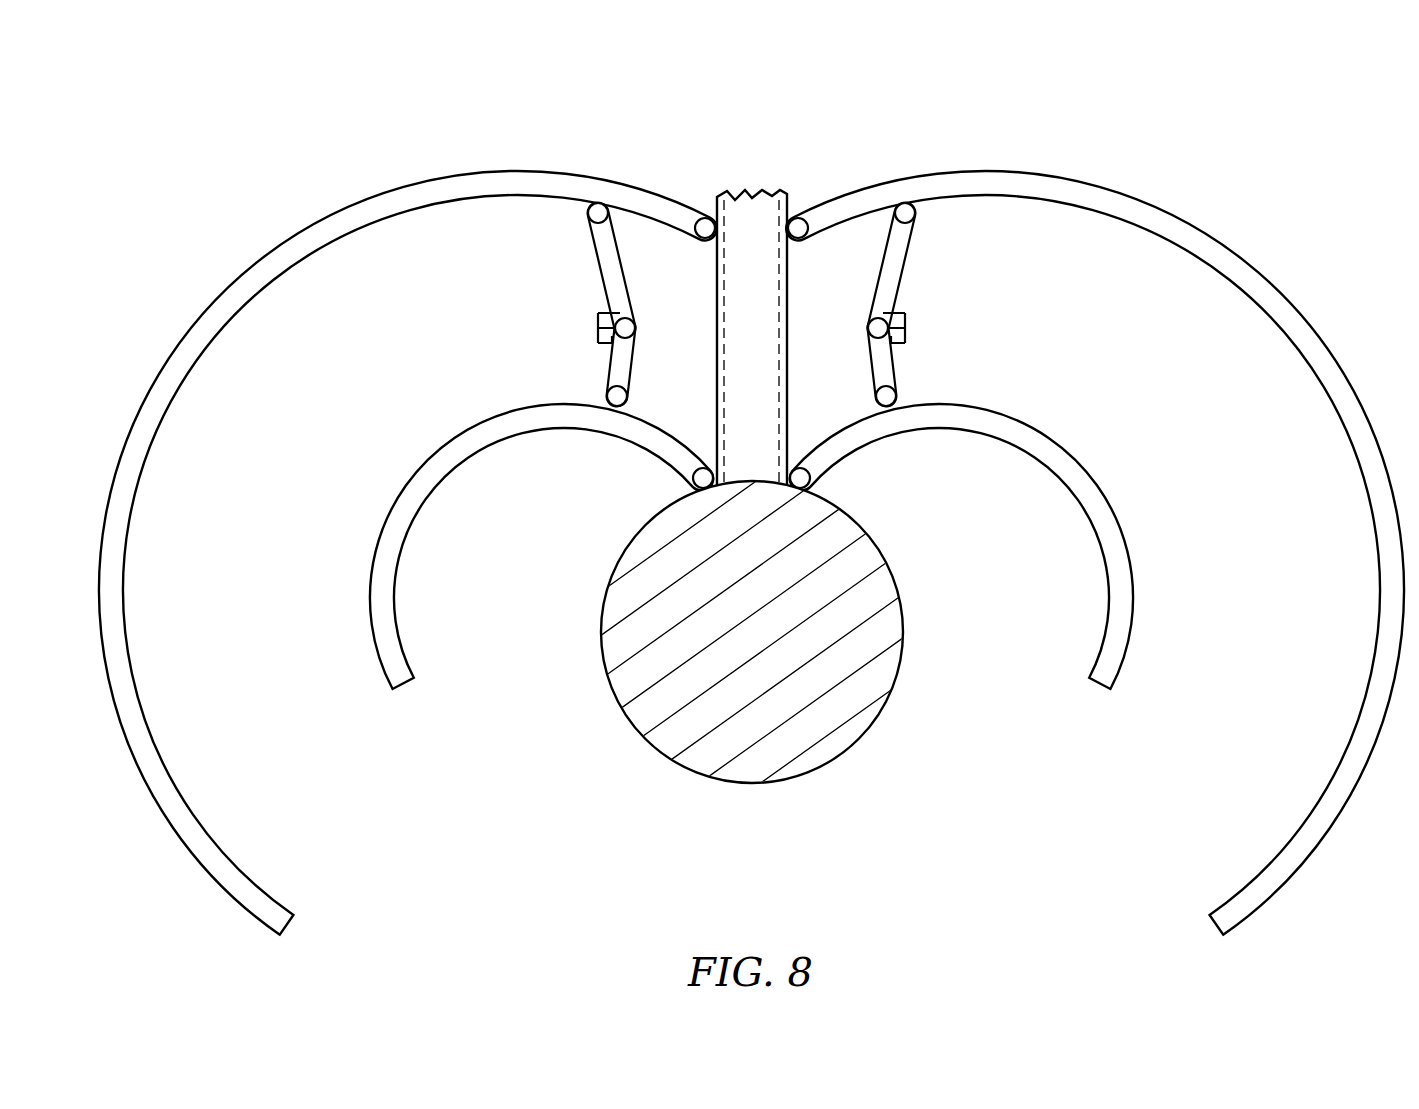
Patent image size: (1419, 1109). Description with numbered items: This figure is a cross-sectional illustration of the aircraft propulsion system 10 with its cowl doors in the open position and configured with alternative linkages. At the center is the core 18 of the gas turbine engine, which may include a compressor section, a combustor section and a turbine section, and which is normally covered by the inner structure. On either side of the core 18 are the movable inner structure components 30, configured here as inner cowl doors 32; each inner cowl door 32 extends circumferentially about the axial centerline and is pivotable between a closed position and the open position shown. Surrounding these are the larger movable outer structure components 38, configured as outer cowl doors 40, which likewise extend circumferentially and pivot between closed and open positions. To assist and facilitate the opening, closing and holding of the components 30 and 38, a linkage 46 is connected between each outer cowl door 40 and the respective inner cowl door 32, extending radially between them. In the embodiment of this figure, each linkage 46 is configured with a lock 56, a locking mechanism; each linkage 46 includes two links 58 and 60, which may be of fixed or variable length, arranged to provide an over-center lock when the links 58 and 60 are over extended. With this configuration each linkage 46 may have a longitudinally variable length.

The aircraft propulsion system 10 is at (1050, 138).
The core 18 is at (903, 600).
The inner structure component 30 is at (756, 546).
The inner cowl door 32 is at (374, 573).
The outer structure component 38 is at (751, 504).
The outer cowl door 40 is at (433, 181).
The linkage 46 is at (756, 313).
The lock 56 is at (589, 325).
The link 58 is at (752, 304).
The link 60 is at (605, 362).